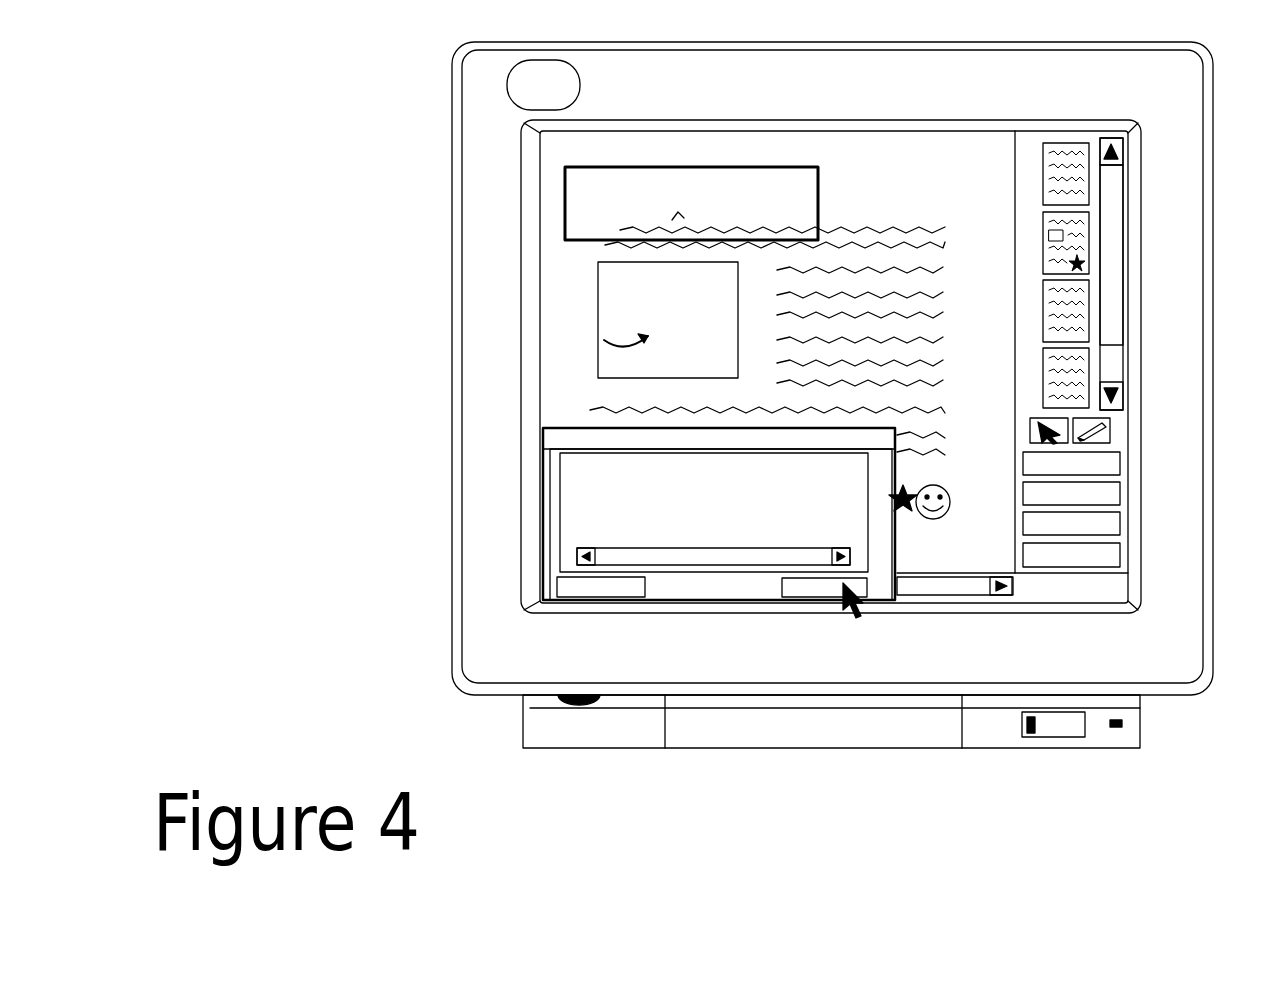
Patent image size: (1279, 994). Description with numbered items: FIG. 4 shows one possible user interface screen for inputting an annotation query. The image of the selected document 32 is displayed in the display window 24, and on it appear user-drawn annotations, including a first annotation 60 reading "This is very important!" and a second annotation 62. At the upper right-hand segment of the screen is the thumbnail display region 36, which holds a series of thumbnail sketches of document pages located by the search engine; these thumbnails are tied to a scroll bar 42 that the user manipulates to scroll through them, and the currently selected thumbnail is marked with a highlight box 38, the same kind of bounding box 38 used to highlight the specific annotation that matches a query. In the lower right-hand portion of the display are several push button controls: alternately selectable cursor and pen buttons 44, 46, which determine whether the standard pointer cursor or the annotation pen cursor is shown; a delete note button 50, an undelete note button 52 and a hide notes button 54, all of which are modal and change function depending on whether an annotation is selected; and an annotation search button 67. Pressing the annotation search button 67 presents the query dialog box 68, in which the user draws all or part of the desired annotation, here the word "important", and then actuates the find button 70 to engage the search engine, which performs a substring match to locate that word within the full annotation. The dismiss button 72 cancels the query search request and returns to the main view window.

The display window 24 is at (570, 395).
The document 32 is at (940, 198).
The thumbnail display region 36 is at (1187, 274).
The highlight box 38 is at (818, 180).
The scroll bar 42 is at (1110, 330).
The cursor button 44 is at (1030, 437).
The pen button 46 is at (1110, 436).
The delete note button 50 is at (1120, 463).
The undelete note button 52 is at (1120, 492).
The hide notes button 54 is at (1120, 527).
The first annotation 60 is at (600, 212).
The second annotation 62 is at (560, 335).
The annotation search button 67 is at (1023, 558).
The query dialog box 68 is at (642, 606).
The find button 70 is at (792, 598).
The dismiss button 72 is at (557, 597).